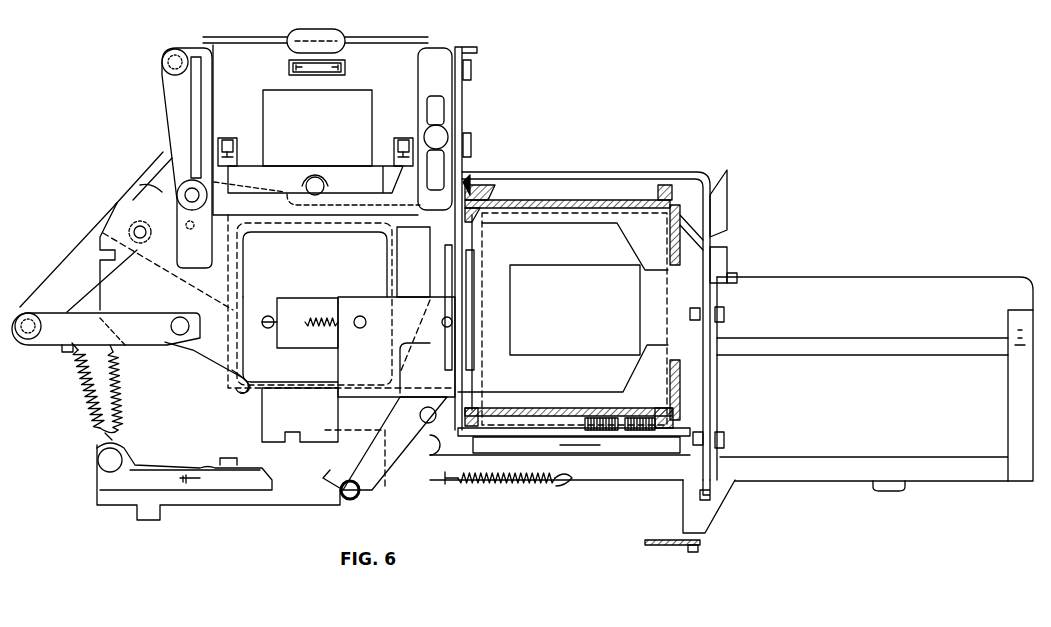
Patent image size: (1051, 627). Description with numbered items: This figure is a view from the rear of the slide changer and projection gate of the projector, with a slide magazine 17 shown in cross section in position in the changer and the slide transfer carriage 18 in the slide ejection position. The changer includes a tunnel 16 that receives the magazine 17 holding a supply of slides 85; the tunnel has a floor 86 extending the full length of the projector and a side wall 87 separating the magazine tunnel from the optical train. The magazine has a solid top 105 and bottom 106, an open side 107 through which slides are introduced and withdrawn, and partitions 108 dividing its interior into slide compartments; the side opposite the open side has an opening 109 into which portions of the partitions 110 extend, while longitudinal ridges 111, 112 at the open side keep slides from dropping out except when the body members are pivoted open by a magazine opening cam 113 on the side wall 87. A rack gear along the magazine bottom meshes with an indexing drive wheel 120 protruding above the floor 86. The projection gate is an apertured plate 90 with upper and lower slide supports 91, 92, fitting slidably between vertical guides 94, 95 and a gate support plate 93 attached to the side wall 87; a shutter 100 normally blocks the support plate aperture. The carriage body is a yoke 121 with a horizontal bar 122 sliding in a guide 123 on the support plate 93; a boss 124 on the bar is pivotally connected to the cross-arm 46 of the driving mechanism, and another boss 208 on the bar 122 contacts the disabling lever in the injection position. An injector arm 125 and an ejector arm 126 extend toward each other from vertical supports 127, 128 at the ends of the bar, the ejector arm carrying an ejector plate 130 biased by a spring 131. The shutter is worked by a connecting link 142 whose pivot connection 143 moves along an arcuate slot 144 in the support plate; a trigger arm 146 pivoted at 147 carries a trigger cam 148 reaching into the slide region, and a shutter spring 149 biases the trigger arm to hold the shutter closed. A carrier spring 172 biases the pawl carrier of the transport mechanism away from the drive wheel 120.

The tunnel 16 is at (534, 163).
The slide magazine 17 is at (640, 187).
The slide transfer carriage 18 is at (816, 491).
The cross-arm 46 is at (655, 546).
The slide 85 is at (610, 240).
The floor 86 is at (548, 418).
The side wall 87 is at (468, 182).
The apertured plate 90 is at (238, 46).
The upper slide support 91 is at (262, 183).
The lower slide support 92 is at (268, 428).
The gate support plate 93 is at (101, 270).
The vertical guide 94 is at (176, 80).
The vertical guide 95 is at (432, 60).
The shutter 100 is at (308, 243).
The top 105 is at (555, 202).
The bottom 106 is at (515, 425).
The open side 107 is at (414, 239).
The partitions 108 is at (605, 245).
The opening 109 is at (650, 278).
The partition portions 110 is at (668, 348).
The longitudinal ridge 111 is at (486, 222).
The longitudinal ridge 112 is at (472, 410).
The magazine opening cam 113 is at (480, 257).
The indexing drive wheel 120 is at (625, 410).
The yoke 121 is at (646, 489).
The horizontal bar 122 is at (460, 482).
The guide 123 is at (372, 490).
The boss 124 is at (712, 500).
The injector arm 125 is at (792, 281).
The ejector arm 126 is at (362, 300).
The vertical support 127 is at (1018, 405).
The vertical support 128 is at (353, 408).
The ejector plate 130 is at (405, 270).
The spring 131 is at (318, 312).
The connecting link 142 is at (72, 298).
The pivot connection 143 is at (132, 229).
The arcuate slot 144 is at (148, 188).
The trigger arm 146 is at (118, 322).
The pivot 147 is at (170, 326).
The trigger cam 148 is at (253, 372).
The shutter spring 149 is at (80, 378).
The carrier spring 172 is at (508, 484).
The boss 208 is at (896, 486).